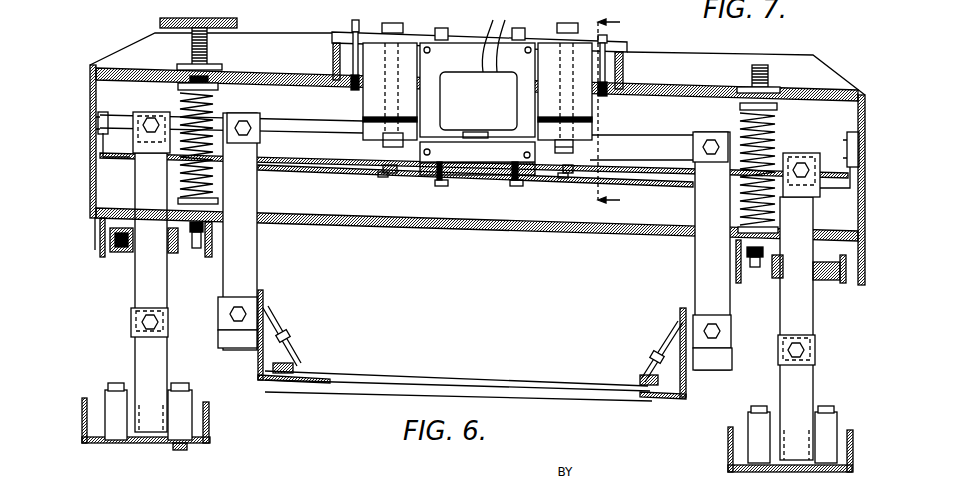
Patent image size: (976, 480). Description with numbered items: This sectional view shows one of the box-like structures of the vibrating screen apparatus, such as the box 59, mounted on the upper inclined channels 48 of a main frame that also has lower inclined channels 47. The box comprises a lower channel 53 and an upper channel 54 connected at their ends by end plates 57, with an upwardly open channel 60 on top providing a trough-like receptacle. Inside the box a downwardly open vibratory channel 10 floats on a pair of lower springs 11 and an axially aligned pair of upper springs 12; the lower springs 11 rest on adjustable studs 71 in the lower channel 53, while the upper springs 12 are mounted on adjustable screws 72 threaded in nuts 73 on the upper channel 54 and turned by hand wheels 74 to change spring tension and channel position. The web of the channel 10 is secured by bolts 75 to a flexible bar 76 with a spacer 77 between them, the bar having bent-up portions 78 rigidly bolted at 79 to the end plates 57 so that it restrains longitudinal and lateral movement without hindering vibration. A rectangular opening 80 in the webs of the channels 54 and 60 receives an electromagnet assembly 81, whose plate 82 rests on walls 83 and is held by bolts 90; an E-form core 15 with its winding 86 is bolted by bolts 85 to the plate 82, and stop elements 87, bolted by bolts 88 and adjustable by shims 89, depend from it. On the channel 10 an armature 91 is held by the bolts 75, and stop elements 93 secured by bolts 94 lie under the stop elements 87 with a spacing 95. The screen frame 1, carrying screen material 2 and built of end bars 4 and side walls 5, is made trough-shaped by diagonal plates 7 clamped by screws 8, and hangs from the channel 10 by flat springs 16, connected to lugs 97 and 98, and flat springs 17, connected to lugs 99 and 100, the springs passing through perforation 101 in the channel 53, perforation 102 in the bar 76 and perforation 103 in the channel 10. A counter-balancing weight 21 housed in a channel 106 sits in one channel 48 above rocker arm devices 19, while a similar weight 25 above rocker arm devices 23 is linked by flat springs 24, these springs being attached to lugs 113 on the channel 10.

The screen frame 1 is at (258, 370).
The screen material 2 is at (340, 373).
The end bars 4 is at (372, 392).
The side walls 5 is at (264, 297).
The diagonal plates 7 is at (272, 320).
The screws 8 is at (289, 339).
The vibratory channel 10 is at (622, 170).
The lower springs 11 is at (214, 183).
The upper springs 12 is at (479, 118).
The E-form core 15 is at (462, 66).
The flat springs 16 is at (711, 251).
The flat springs 17 is at (237, 235).
The rocker arm devices 19 is at (828, 425).
The counter-balancing weight 21 is at (826, 281).
The rocker arm devices 23 is at (106, 392).
The flat springs 24 is at (167, 287).
The counter-balancing weight 25 is at (120, 253).
The lower inclined channels 47 is at (178, 450).
The upper inclined channels 48 is at (99, 258).
The lower channel 53 is at (477, 245).
The upper channel 54 is at (700, 96).
The end plates 57 is at (105, 67).
The box 59 is at (660, 118).
The upwardly open channels 60 is at (703, 77).
The adjustable studs 71 is at (193, 250).
The adjustable screws 72 is at (208, 53).
The nuts 73 is at (222, 68).
The hand wheels 74 is at (237, 20).
The bolts 75 is at (440, 184).
The flexible bar 76 is at (408, 160).
The spacer 77 is at (490, 165).
The bent-up portions 78 is at (106, 151).
The bolts 79 is at (108, 118).
The rectangular opening 80 is at (354, 92).
The electromagnet assembly 81 is at (405, 45).
The plate 82 is at (354, 20).
The walls 83 is at (333, 50).
The bolts 85 is at (443, 30).
The winding 86 is at (477, 90).
The stop elements 87 is at (477, 70).
The bolts 88 is at (393, 23).
The shims 89 is at (400, 117).
The bolts 90 is at (615, 30).
The armature 91 is at (477, 173).
The stop elements 93 is at (405, 175).
The bolts 94 is at (385, 175).
The space 95 is at (383, 140).
The lugs 97 is at (693, 148).
The lugs 98 is at (733, 359).
The lugs 99 is at (260, 137).
The lugs 100 is at (222, 343).
The perforation 101 is at (262, 220).
The perforation 102 is at (262, 172).
The perforation 103 is at (268, 158).
The channel 106 is at (97, 275).
The lug 113 is at (808, 152).